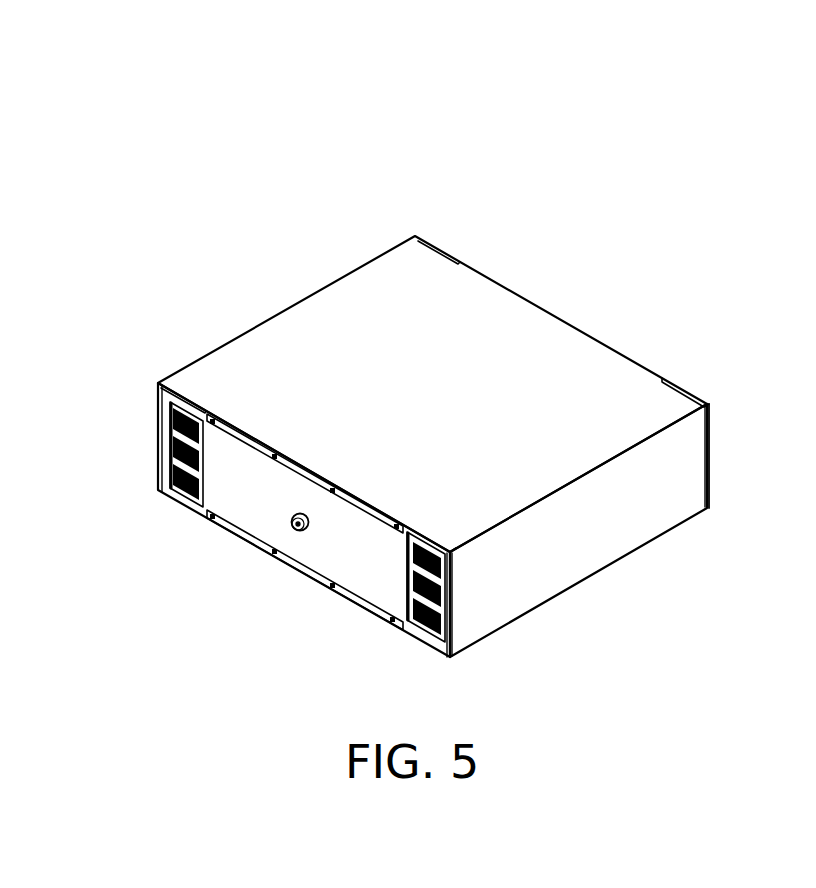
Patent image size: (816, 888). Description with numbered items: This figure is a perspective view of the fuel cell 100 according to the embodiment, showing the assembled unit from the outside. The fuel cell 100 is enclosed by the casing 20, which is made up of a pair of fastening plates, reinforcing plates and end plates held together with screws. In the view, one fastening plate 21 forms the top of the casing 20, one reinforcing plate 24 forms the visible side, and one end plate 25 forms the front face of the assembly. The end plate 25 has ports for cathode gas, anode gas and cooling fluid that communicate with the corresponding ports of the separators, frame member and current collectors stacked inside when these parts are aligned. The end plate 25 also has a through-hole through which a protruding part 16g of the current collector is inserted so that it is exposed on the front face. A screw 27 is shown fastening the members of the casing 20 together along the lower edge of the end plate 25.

The fuel cell 100 is at (164, 204).
The casing 20 is at (585, 347).
The fastening plate 21 is at (664, 397).
The reinforcing plate 24 is at (570, 577).
The end plate 25 is at (243, 513).
The protruding part 16g is at (297, 533).
The screw 27 is at (392, 621).